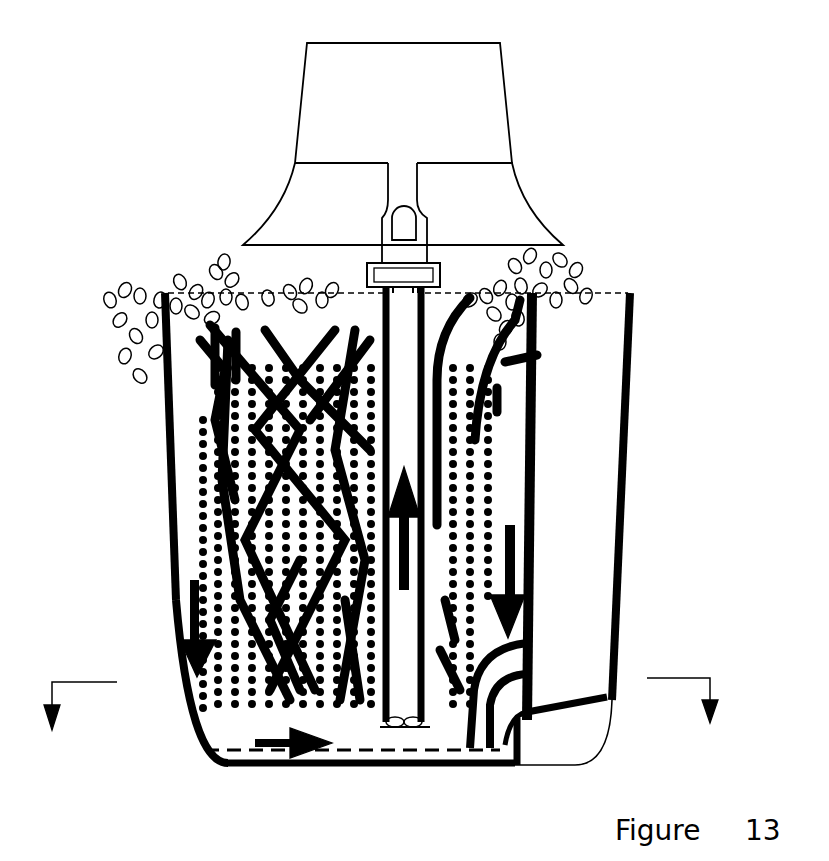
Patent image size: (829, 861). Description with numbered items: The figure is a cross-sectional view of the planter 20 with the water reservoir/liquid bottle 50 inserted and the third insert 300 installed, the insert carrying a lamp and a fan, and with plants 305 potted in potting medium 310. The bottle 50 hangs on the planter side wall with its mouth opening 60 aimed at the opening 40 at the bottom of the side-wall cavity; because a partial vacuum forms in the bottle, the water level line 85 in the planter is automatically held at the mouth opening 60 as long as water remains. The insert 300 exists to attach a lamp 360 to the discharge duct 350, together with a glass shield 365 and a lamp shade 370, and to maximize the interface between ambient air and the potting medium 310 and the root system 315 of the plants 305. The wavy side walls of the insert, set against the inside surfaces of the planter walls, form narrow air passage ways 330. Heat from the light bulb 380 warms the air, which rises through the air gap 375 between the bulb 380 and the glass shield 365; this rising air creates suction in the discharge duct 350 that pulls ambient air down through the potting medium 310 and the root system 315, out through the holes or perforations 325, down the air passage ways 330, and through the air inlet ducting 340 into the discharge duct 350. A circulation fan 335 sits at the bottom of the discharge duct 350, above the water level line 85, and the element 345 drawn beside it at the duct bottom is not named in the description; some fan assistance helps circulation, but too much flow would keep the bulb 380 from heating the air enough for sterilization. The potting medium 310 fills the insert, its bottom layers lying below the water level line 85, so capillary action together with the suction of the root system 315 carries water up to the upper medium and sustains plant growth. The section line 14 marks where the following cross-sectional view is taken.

The section line 14— 14 is at (376, 722).
The planter 20 is at (65, 276).
The opening 40 is at (484, 742).
The water reservoir/liquid bottle 50 is at (632, 372).
The mouth opening 60 is at (500, 745).
The water level line 85 is at (230, 760).
The third insert 300 is at (207, 543).
The plants 305 is at (577, 262).
The potting medium 310 is at (210, 512).
The root system 315 is at (253, 650).
The holes or perforations 325 is at (497, 462).
The air passage ways 330 is at (510, 503).
The circulation fan 335 is at (410, 727).
The air inlet ducting 340 is at (205, 720).
The valve 345 is at (395, 735).
The discharge duct 350 is at (405, 650).
The lamp 360 is at (433, 168).
The glass shield 365 is at (390, 190).
The lamp shade 370 is at (503, 102).
The air gap 375 is at (383, 223).
The light bulb 380 is at (430, 220).